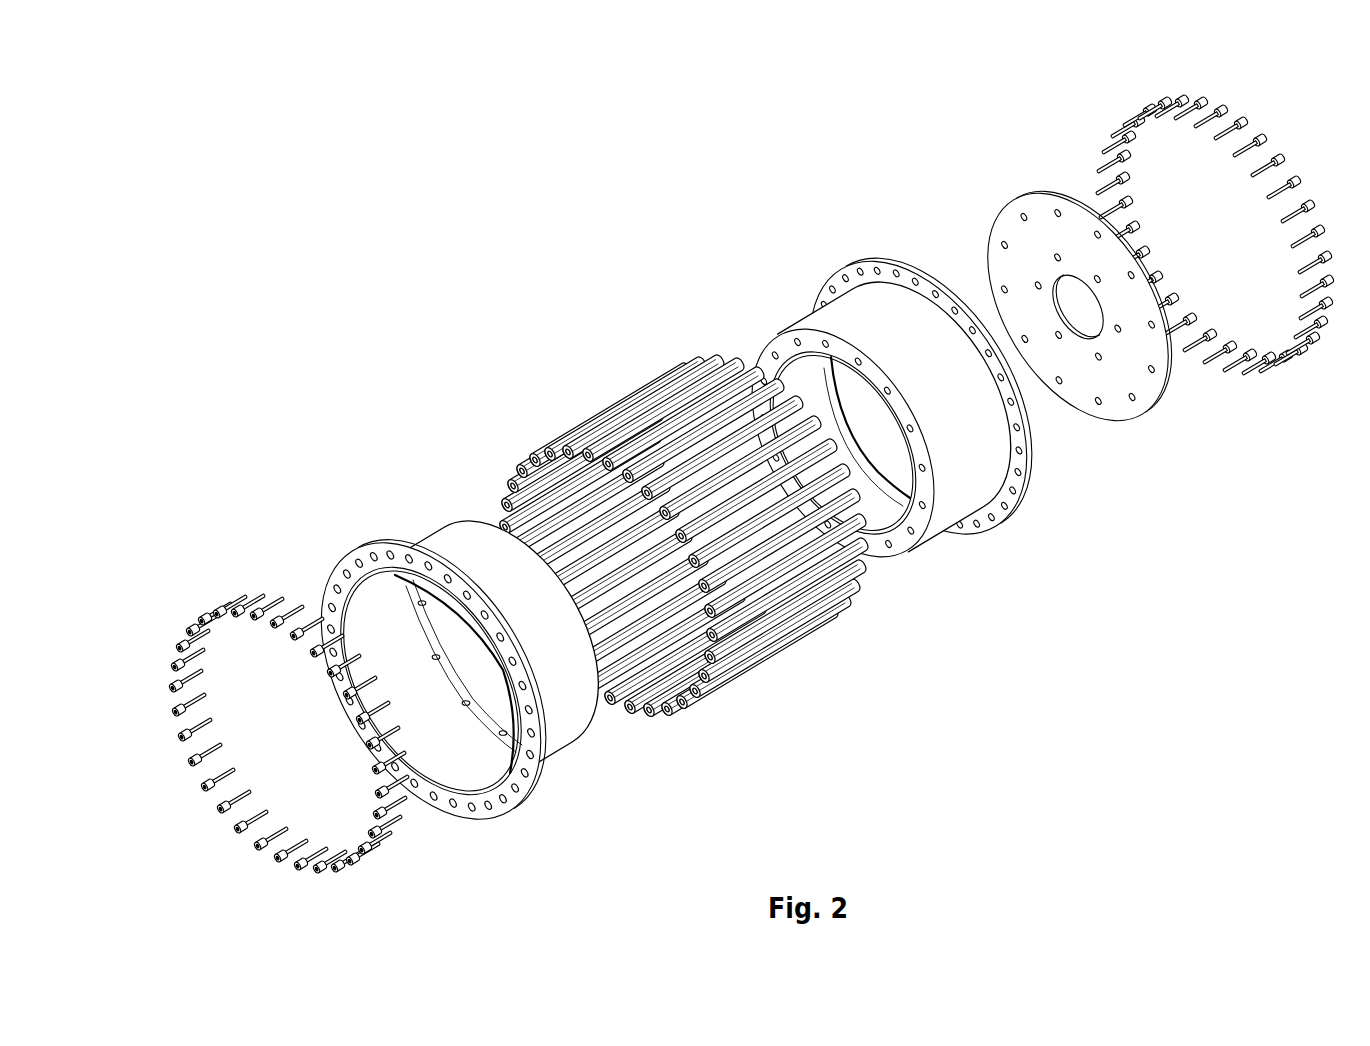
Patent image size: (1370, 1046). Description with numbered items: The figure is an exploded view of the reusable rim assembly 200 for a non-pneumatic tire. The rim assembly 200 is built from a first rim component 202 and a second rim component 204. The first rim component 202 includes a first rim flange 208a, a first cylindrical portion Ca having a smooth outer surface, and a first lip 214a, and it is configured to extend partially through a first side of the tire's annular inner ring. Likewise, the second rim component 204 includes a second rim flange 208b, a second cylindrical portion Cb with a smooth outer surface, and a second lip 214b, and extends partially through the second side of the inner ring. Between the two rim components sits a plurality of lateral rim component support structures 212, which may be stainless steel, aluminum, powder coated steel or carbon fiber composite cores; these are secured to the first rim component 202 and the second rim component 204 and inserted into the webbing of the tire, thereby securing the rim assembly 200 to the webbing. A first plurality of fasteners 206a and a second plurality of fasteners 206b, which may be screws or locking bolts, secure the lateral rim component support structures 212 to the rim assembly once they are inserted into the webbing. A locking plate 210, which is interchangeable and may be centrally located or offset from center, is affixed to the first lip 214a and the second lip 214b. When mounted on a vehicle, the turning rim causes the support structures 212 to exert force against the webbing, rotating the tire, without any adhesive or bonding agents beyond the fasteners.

The rim assembly 200 is at (558, 278).
The first rim component 202 is at (1117, 97).
The second rim component 204 is at (438, 516).
The first plurality of fasteners 206a is at (1257, 370).
The second plurality of fasteners 206b is at (190, 600).
The first rim flange 208a is at (997, 513).
The second rim flange 208b is at (437, 793).
The locking plate 210 is at (1133, 392).
The plurality of lateral rim component support structures 212 is at (737, 658).
The first lip 214a is at (893, 538).
The second lip 214b is at (473, 713).
The first cylindrical portion Ca is at (850, 325).
The second cylindrical portion Cb is at (557, 733).